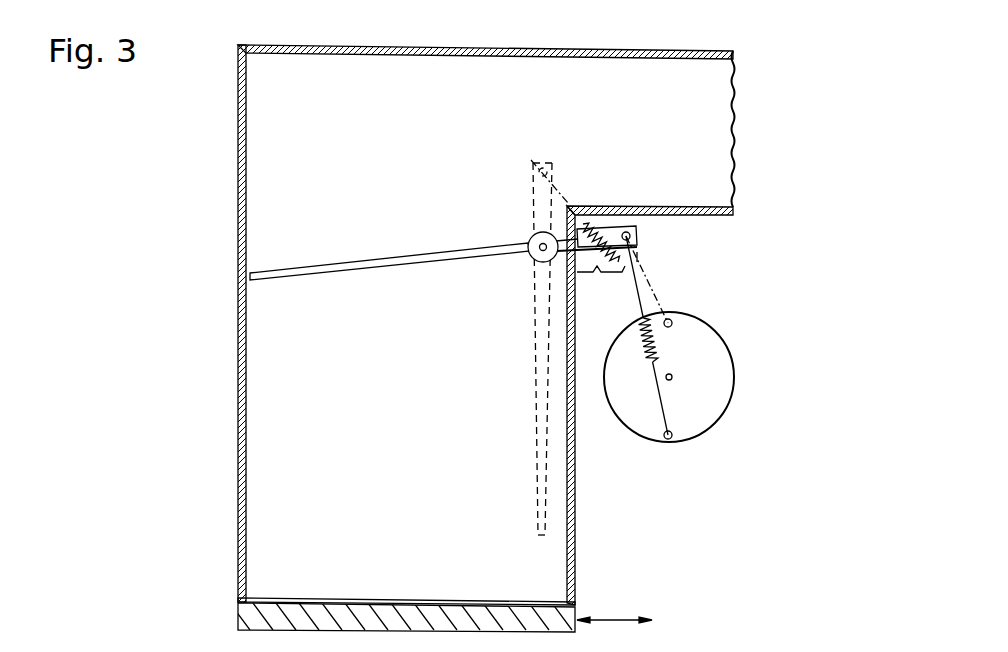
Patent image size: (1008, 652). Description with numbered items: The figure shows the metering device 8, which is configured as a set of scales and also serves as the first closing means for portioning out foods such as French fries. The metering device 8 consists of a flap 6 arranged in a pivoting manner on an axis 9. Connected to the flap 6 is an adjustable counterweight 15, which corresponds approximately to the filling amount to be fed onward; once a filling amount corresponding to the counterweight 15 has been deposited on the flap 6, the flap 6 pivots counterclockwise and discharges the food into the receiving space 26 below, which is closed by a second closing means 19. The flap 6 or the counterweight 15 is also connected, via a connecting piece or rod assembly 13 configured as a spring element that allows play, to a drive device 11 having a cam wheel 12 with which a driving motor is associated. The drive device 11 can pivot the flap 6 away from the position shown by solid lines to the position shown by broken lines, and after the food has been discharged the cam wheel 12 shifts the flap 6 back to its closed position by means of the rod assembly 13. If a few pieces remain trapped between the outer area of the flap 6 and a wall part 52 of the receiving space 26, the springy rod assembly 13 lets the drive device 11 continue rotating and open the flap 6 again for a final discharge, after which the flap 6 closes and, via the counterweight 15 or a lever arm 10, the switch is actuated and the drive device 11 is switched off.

The flap 6 is at (386, 258).
The metering device 8 is at (501, 309).
The axis 9 is at (532, 260).
The lever arm 10 is at (601, 266).
The drive device 11 is at (695, 360).
The cam wheel 12 is at (722, 373).
The rod assembly 13 is at (640, 298).
The adjustable counterweight 15 is at (637, 243).
The second closing means 19 is at (257, 620).
The receiving space 26 is at (414, 464).
The wall part 52 is at (238, 271).